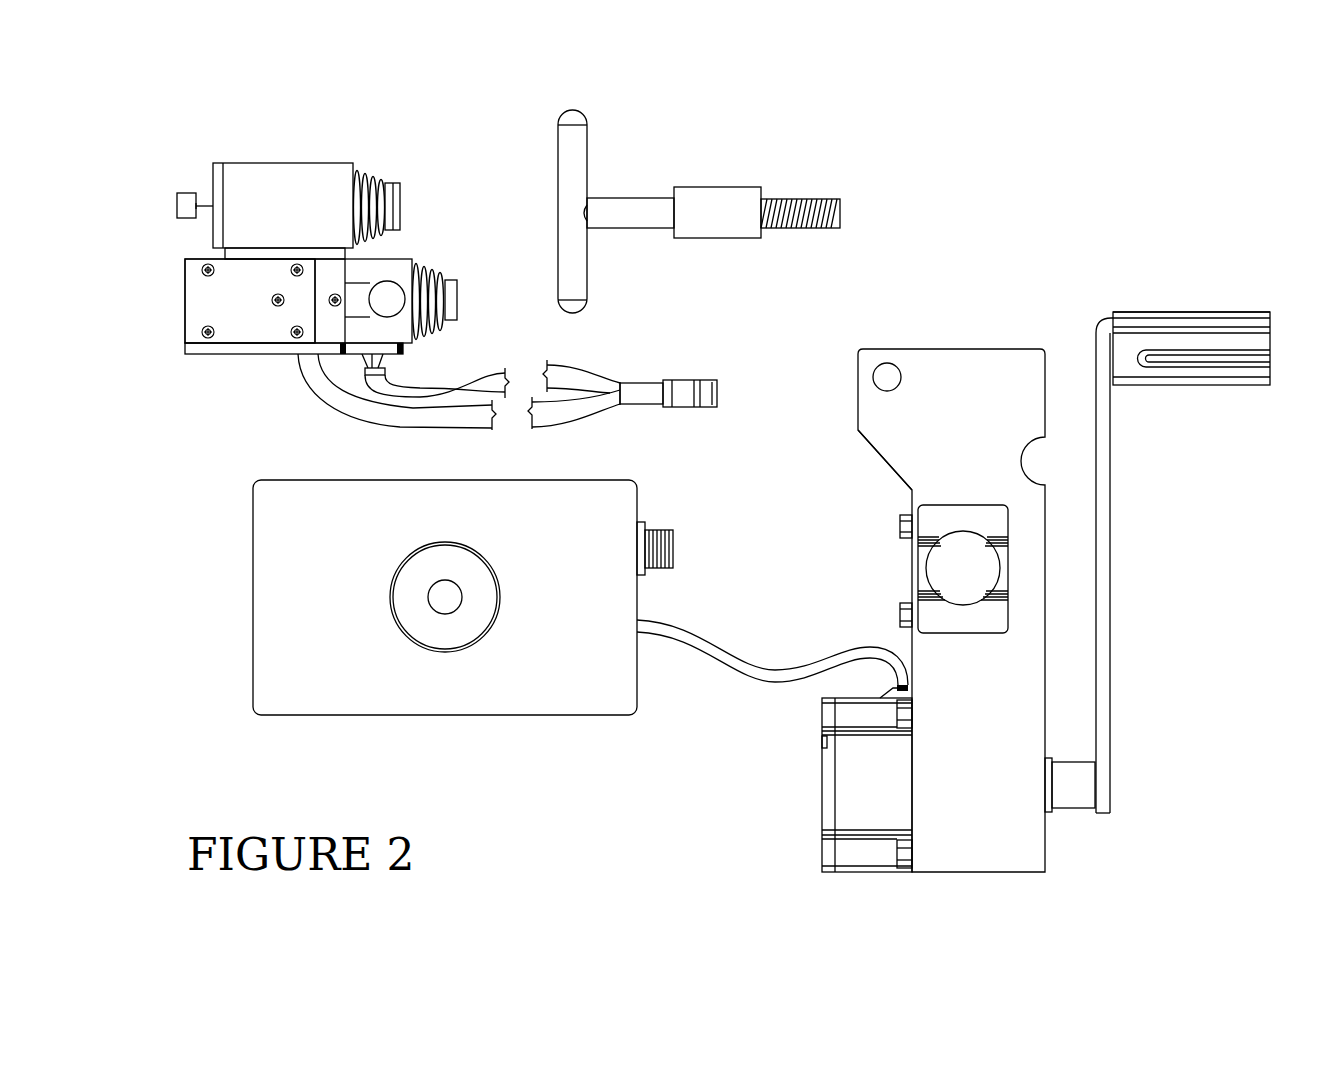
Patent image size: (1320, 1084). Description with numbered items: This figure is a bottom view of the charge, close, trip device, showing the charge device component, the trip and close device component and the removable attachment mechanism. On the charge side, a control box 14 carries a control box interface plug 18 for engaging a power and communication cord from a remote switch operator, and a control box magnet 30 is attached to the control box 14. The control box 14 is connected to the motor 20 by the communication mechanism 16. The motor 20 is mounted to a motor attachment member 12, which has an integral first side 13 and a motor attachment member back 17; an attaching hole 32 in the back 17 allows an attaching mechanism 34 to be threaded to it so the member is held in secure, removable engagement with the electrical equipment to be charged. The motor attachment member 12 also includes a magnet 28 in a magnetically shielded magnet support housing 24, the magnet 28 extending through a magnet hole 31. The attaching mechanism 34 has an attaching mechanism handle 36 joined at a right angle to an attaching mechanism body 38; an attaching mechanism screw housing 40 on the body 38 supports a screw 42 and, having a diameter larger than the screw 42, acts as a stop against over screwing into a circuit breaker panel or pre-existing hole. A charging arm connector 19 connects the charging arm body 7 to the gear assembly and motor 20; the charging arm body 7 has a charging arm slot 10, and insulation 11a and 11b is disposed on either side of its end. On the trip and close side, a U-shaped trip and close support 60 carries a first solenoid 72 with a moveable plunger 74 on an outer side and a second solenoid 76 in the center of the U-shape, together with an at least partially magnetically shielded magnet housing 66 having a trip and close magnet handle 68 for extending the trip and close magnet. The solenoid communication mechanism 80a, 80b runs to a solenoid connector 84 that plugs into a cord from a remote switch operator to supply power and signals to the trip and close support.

The charging arm body 7 is at (1110, 467).
The charging arm slot 10 is at (1193, 352).
The insulation 11a is at (1176, 385).
The insulation 11b is at (1180, 312).
The motor attachment member 12 is at (930, 587).
The integral first side 13 is at (938, 565).
The control box 14 is at (463, 581).
The communication mechanism 16 is at (772, 674).
The motor attachment member back 17 is at (883, 432).
The control box interface plug 18 is at (650, 533).
The charging arm connector 19 is at (1073, 800).
The motor 20 is at (842, 779).
The magnetically shielded magnet support housing 24 is at (972, 625).
The magnet 28 is at (968, 548).
The control box magnet 30 is at (441, 552).
The magnet hole 31 is at (943, 540).
The attaching hole 32 is at (872, 370).
The attaching mechanism 34 is at (660, 211).
The attaching mechanism handle 36 is at (566, 178).
The attaching mechanism body 38 is at (621, 200).
The attaching mechanism screw housing 40 is at (709, 193).
The screw 42 is at (804, 200).
The U-shaped trip and close support 60 is at (321, 304).
The magnetically shielded magnet housing 66 is at (247, 330).
The trip and close magnet handle 68 is at (392, 310).
The first solenoid 72 is at (275, 174).
The moveable plunger 74 is at (188, 198).
The second solenoid 76 is at (396, 267).
The solenoid communication mechanism 80a is at (356, 405).
The solenoid communication mechanism 80b is at (481, 374).
The solenoid connector 84 is at (688, 384).